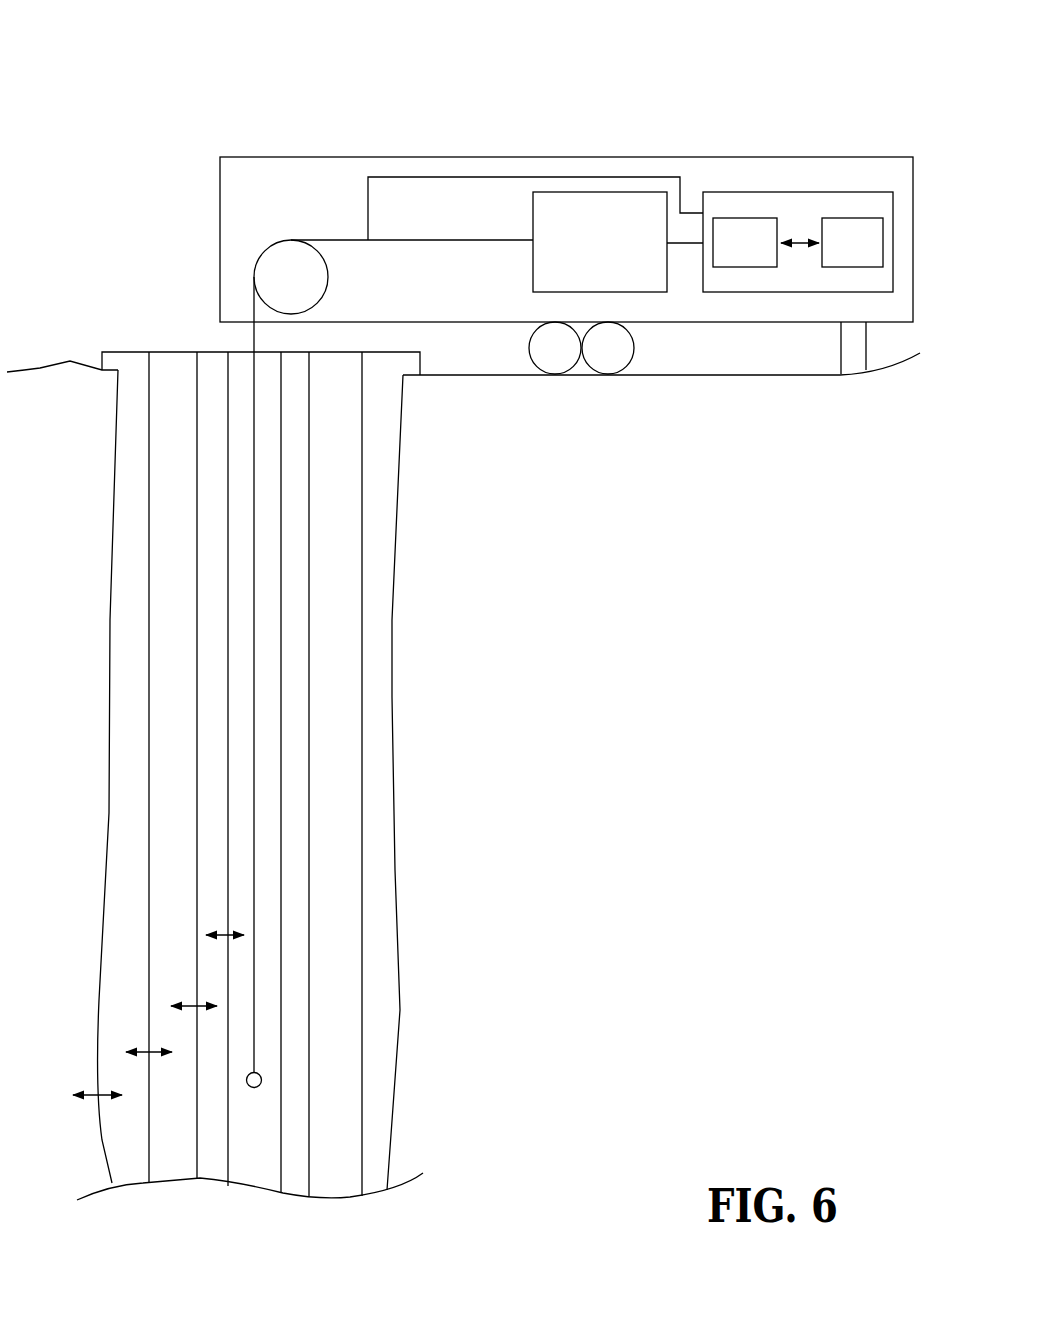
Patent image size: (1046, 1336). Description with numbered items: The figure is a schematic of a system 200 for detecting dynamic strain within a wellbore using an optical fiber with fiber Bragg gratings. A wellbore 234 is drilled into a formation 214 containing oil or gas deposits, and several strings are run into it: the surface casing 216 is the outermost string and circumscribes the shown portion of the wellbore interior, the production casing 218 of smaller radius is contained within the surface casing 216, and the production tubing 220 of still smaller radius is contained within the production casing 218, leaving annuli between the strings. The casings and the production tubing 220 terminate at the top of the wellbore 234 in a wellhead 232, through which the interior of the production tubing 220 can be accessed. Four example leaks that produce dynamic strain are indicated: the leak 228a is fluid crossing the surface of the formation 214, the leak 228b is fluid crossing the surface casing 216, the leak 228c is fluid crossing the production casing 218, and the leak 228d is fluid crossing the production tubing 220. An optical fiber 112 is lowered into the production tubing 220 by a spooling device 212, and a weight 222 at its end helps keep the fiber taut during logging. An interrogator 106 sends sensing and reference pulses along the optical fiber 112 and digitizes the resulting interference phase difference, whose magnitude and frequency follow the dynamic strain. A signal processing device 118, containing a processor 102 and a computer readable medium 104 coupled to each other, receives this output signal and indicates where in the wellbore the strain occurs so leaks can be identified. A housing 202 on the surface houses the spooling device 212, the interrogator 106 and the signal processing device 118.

The system 200 is at (128, 79).
The housing 202 is at (793, 156).
The signal processing device 118 is at (793, 191).
The interrogator 106 is at (620, 256).
The computer readable medium 104 is at (765, 256).
The processor 102 is at (872, 256).
The spooling device 212 is at (328, 279).
The optical fiber 112 is at (253, 340).
The wellhead 232 is at (125, 352).
The wellbore 234 is at (138, 502).
The formation 214 is at (85, 637).
The surface casing 216 is at (362, 492).
The production casing 218 is at (310, 590).
The production tubing 220 is at (281, 1147).
The weight 222 is at (255, 1088).
The leak 228a is at (98, 1088).
The leak 228b is at (147, 1047).
The leak 228c is at (190, 1000).
The leak 228d is at (222, 930).